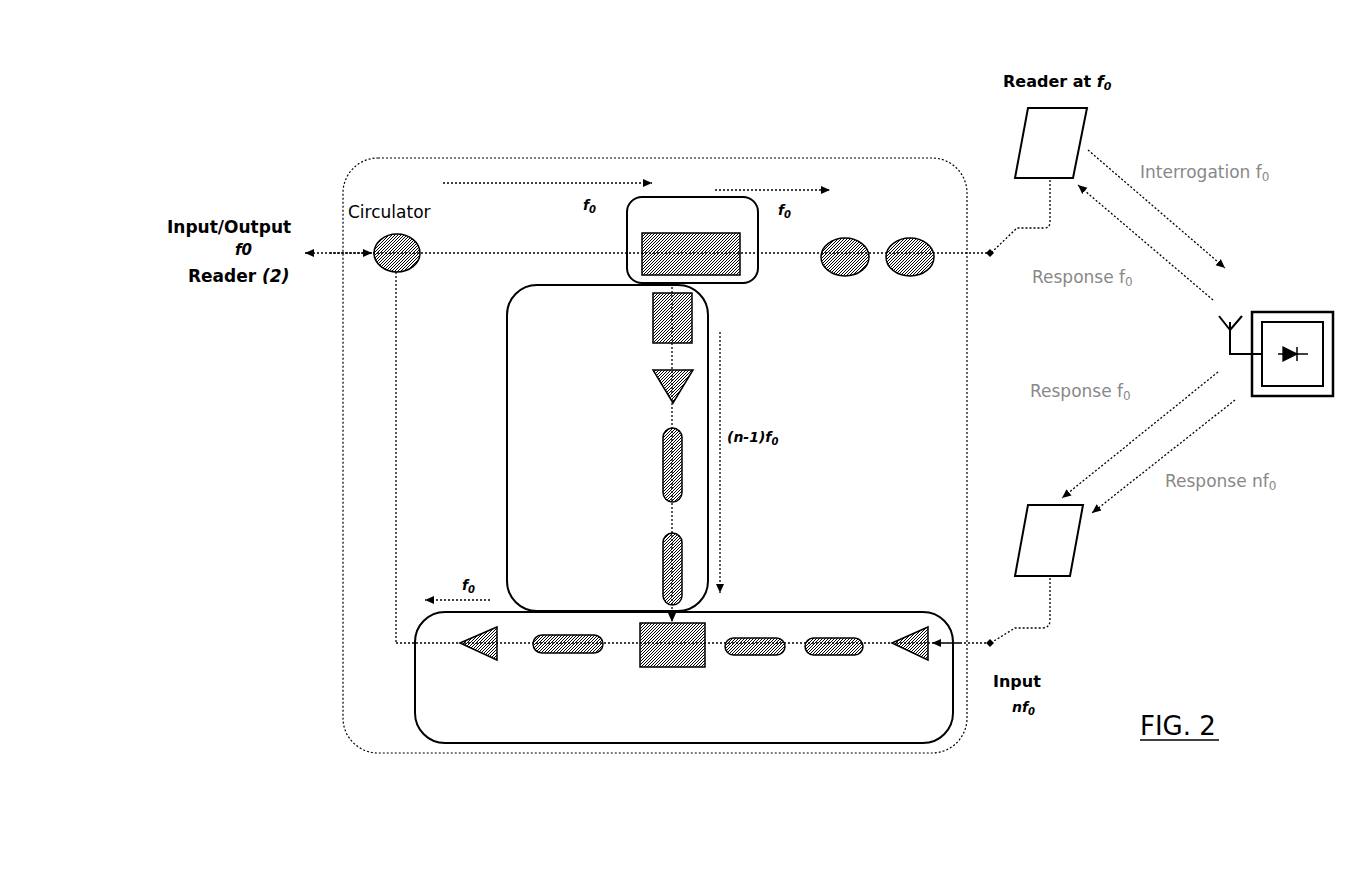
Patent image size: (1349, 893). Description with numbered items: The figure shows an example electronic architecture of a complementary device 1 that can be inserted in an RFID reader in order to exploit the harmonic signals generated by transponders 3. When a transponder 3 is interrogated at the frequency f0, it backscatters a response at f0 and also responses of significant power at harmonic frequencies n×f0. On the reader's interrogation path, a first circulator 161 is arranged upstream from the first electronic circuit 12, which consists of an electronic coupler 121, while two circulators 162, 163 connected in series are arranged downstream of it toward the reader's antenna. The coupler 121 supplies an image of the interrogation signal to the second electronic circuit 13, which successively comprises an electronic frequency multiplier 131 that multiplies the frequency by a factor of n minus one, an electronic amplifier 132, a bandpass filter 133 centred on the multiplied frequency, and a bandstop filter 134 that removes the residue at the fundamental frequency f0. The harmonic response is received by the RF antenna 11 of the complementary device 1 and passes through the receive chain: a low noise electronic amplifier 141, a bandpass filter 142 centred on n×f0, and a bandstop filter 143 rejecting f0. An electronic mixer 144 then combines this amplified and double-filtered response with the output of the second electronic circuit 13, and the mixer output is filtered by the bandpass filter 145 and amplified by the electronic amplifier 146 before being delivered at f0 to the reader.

The complementary device 1 is at (726, 82).
The transponder 3 is at (1284, 296).
The RF antenna 11 is at (1073, 567).
The first electronic circuit 12 is at (707, 218).
The second electronic circuit 13 is at (610, 448).
The electronic coupler 121 is at (713, 268).
The electronic frequency multiplier 131 is at (690, 326).
The electronic amplifier 132 is at (684, 390).
The bandpass filter 133 is at (682, 480).
The bandstop filter 134 is at (682, 565).
The low noise electronic amplifier 141 is at (910, 720).
The bandpass filter 142 is at (830, 720).
The bandstop filter 143 is at (748, 720).
The electronic mixer 144 is at (680, 706).
The bandpass filter 145 is at (571, 705).
The electronic amplifier 146 is at (483, 705).
The first circulator 161 is at (399, 273).
The circulator 162 is at (845, 277).
The circulator 163 is at (910, 277).